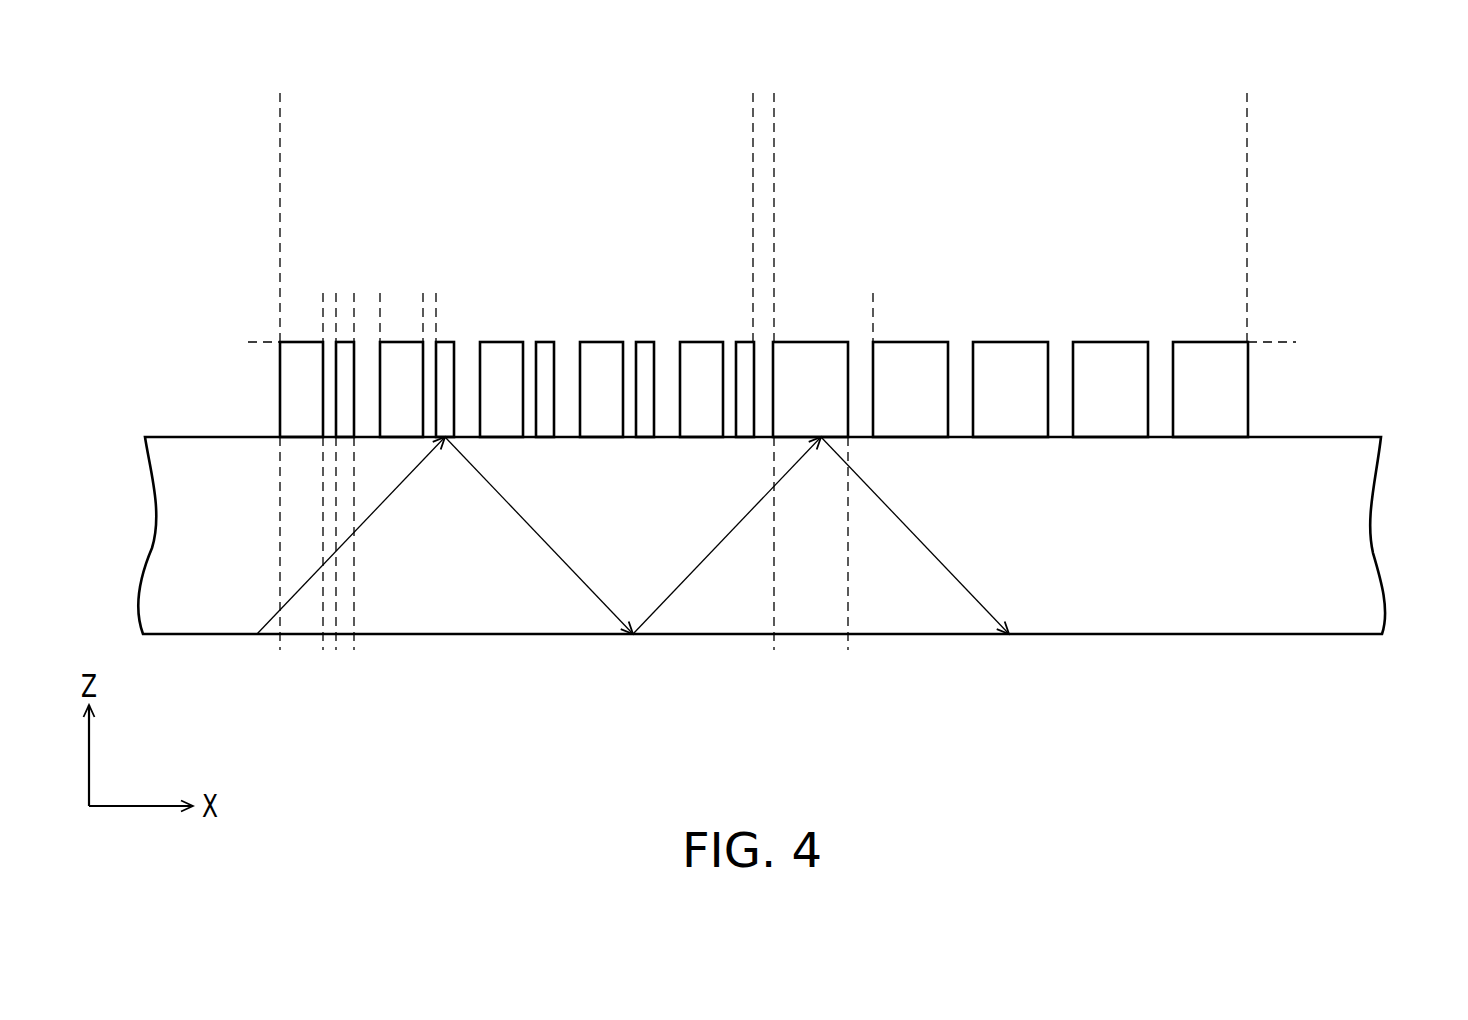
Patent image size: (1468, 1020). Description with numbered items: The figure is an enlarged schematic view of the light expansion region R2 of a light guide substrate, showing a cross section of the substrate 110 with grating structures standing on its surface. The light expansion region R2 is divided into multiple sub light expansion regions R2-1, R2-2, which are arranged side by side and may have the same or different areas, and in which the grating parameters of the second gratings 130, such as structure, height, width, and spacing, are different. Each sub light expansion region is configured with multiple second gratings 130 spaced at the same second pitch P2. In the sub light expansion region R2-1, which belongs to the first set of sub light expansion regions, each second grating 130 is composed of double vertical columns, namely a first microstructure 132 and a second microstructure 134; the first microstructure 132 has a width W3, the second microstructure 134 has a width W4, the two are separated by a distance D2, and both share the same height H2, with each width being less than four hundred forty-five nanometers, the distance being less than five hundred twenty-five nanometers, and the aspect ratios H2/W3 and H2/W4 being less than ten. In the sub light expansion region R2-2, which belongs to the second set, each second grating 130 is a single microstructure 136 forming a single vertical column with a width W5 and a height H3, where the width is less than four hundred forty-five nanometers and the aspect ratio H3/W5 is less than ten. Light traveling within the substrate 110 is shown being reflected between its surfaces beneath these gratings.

The substrate 110 is at (1340, 538).
The second gratings 130 is at (611, 319).
The first microstructure 132 is at (593, 360).
The second microstructure 134 is at (648, 347).
The single microstructure 136 is at (1011, 358).
The light expansion region R2 is at (1105, 338).
The sub light expansion region R2-1 is at (280, 103).
The sub light expansion region R2-2 is at (774, 103).
The second pitch P2 is at (280, 302).
The distance between the first microstructure and the second microstructure D2 is at (400, 302).
The height of the first microstructure and the second microstructure H2 is at (240, 342).
The height of the single microstructure H3 is at (1287, 342).
The width of the first microstructure W3 is at (323, 658).
The width of the second microstructure W4 is at (354, 658).
The width of the single microstructure W5 is at (774, 658).